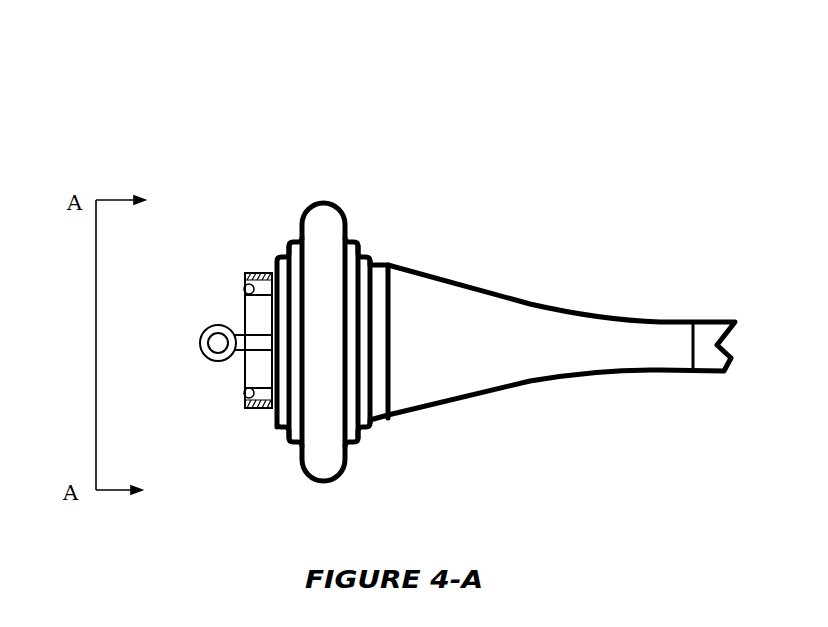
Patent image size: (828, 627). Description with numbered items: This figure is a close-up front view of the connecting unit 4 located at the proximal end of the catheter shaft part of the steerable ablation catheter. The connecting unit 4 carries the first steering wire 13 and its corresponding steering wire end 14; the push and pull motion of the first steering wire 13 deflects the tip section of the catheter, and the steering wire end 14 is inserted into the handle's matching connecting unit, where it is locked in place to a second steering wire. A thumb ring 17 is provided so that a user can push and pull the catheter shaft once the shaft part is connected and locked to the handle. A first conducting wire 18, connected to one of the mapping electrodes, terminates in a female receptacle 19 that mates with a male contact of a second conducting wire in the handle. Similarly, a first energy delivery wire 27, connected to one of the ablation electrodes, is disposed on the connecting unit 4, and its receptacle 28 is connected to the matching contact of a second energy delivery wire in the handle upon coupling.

The connecting unit 4 is at (255, 263).
The first steering wire 13 is at (248, 315).
The steering wire end 14 is at (205, 306).
The thumb ring 17 is at (338, 197).
The first conducting wire 18 is at (268, 408).
The female receptacle 19 is at (245, 408).
The first energy delivery wire 27 is at (266, 277).
The receptacle 28 is at (259, 283).